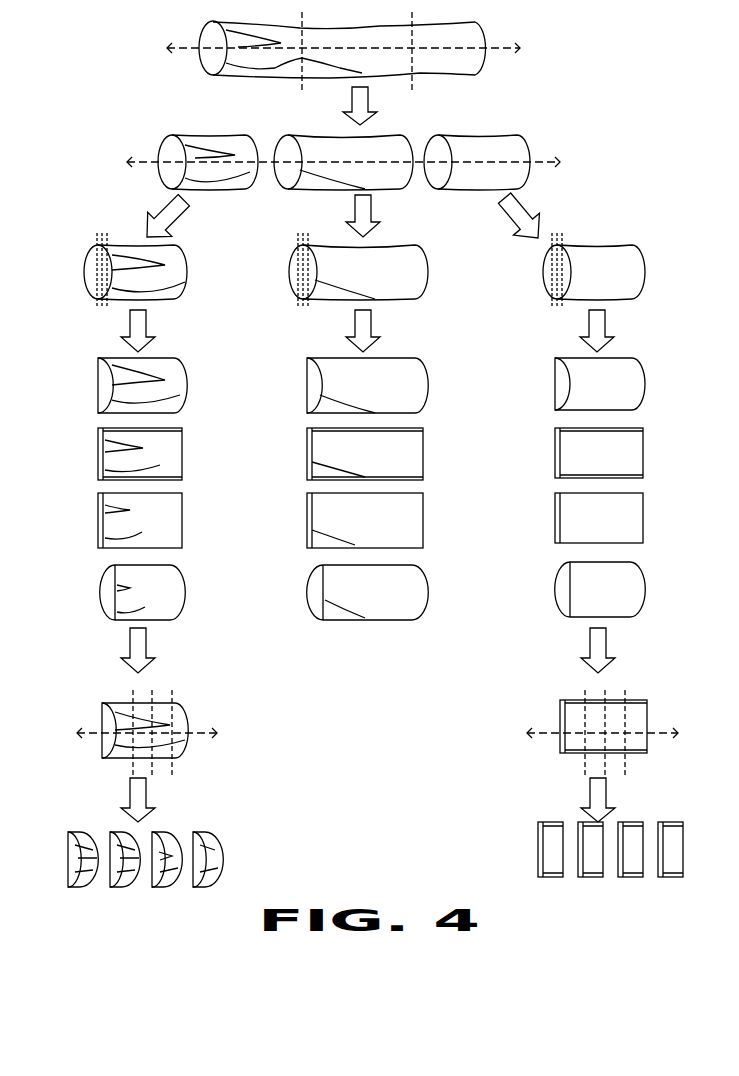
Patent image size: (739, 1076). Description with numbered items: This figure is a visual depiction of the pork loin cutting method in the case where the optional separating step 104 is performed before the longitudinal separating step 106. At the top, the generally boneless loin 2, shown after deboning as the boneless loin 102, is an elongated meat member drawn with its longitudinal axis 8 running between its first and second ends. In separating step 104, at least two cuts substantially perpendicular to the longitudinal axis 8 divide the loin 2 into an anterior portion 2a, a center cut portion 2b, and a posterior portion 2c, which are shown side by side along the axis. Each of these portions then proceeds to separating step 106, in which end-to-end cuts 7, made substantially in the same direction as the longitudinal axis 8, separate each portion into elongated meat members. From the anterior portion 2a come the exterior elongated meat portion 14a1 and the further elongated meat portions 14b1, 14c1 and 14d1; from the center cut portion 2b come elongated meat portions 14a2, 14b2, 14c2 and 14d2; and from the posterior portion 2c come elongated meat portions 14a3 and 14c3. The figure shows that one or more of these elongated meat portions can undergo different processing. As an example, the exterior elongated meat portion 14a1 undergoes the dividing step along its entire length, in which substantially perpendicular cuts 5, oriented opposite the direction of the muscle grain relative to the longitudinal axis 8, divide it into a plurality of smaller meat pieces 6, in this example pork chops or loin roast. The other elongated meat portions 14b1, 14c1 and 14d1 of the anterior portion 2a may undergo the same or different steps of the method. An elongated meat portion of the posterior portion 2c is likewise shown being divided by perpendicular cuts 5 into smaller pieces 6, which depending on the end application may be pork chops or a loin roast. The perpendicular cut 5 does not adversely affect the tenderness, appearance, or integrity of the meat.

The loin 2 is at (465, 26).
The anterior portion 2a is at (190, 133).
The center cut portion 2b is at (317, 133).
The posterior portion 2c is at (480, 133).
The substantially perpendicular cut 5 is at (133, 690).
The smaller pieces 6 is at (110, 832).
The cut substantially in the same direction of the longitudinal axis 7 is at (97, 233).
The longitudinal axis 8 is at (195, 47).
The exterior elongated meat portion 14a1 is at (187, 373).
The elongated meat portion 14b1 is at (182, 450).
The elongated meat portion 14c1 is at (182, 517).
The elongated meat portion 14d1 is at (185, 589).
The elongated meat portion 14a2 is at (428, 373).
The elongated meat portion 14b2 is at (423, 450).
The elongated meat portion 14c2 is at (423, 517).
The elongated meat portion 14d2 is at (428, 589).
The elongated meat portion 14a3 is at (645, 370).
The elongated meat portion 14c3 is at (643, 447).
The generally boneless pork loin 102 is at (540, 22).
The optional separating step 104 is at (563, 132).
The separating step 106 is at (98, 195).